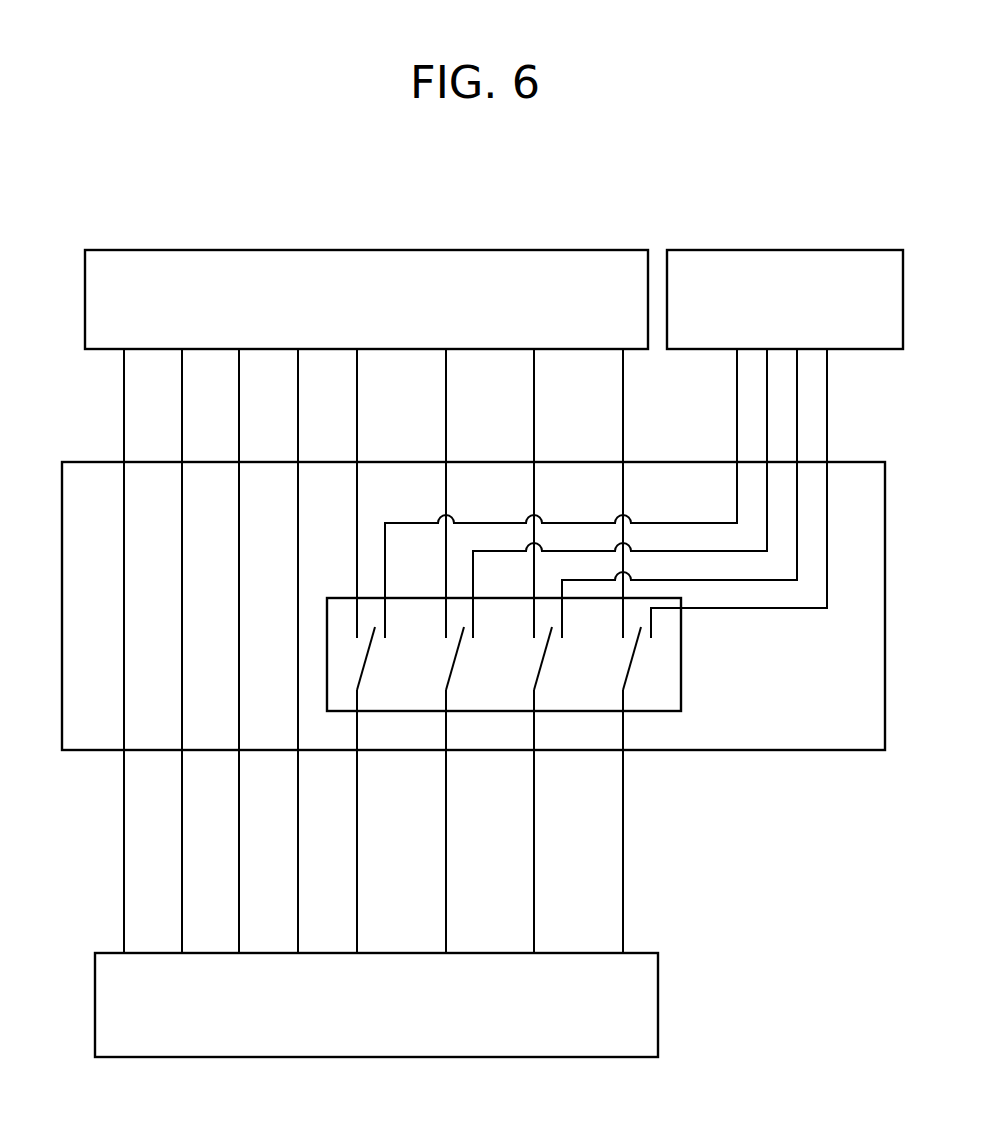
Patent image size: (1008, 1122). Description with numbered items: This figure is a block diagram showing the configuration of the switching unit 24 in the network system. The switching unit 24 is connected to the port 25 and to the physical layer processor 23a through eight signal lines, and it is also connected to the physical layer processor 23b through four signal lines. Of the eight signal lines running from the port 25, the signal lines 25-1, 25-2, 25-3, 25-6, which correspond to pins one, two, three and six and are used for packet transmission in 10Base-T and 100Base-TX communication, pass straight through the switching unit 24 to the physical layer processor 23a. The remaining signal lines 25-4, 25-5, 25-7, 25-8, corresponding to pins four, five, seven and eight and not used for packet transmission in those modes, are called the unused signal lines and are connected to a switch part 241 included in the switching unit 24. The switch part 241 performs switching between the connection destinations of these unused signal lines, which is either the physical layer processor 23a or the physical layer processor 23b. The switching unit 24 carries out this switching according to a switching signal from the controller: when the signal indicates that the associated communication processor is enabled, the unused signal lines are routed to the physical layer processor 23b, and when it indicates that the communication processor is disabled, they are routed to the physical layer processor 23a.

The physical layer processor 23a is at (509, 250).
The physical layer processor 23b is at (831, 250).
The switching unit 24 is at (82, 462).
The switch part 241 is at (681, 680).
The port 25 is at (658, 990).
The signal line 25-1 is at (124, 915).
The signal line 25-2 is at (182, 883).
The signal line 25-3 is at (239, 848).
The signal line 25-4 is at (357, 800).
The signal line 25-5 is at (446, 841).
The signal line 25-6 is at (298, 805).
The signal line 25-7 is at (534, 877).
The signal line 25-8 is at (623, 915).